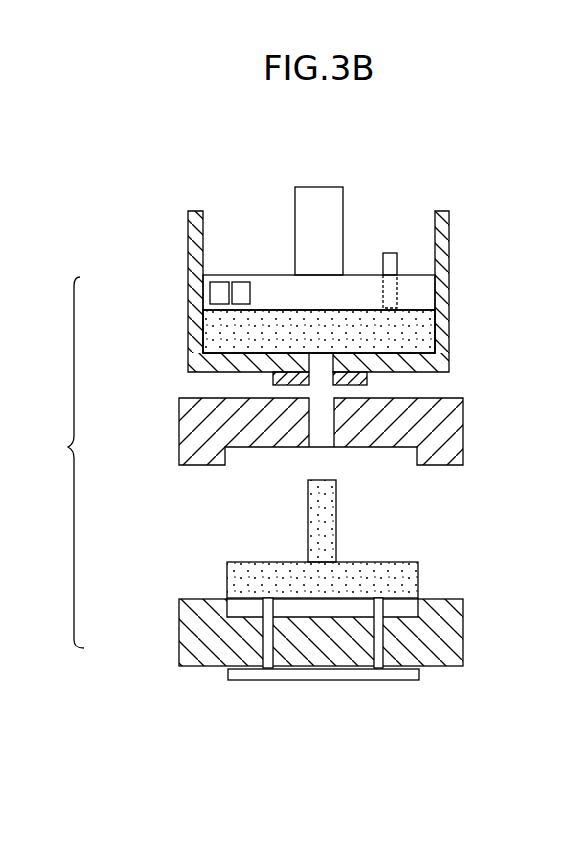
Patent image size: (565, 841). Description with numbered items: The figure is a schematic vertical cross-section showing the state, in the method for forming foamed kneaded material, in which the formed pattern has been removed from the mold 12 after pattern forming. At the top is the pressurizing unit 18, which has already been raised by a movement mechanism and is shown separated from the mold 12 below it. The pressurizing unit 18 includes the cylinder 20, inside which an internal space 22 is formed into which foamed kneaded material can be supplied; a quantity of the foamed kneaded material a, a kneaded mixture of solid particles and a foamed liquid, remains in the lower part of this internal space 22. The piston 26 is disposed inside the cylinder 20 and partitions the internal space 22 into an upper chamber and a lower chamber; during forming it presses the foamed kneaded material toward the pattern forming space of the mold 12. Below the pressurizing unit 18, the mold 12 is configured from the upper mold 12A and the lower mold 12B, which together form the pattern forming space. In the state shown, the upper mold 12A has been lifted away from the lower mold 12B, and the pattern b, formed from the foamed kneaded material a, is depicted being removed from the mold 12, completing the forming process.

The pressurizing unit 18 is at (130, 241).
The cylinder 20 is at (181, 268).
The internal space 22 is at (306, 343).
The piston 26 is at (246, 266).
The foamed kneaded material a is at (425, 329).
The pattern b is at (392, 562).
The upper mold 12A is at (179, 427).
The lower mold 12B is at (179, 627).
The mold 12 is at (141, 666).